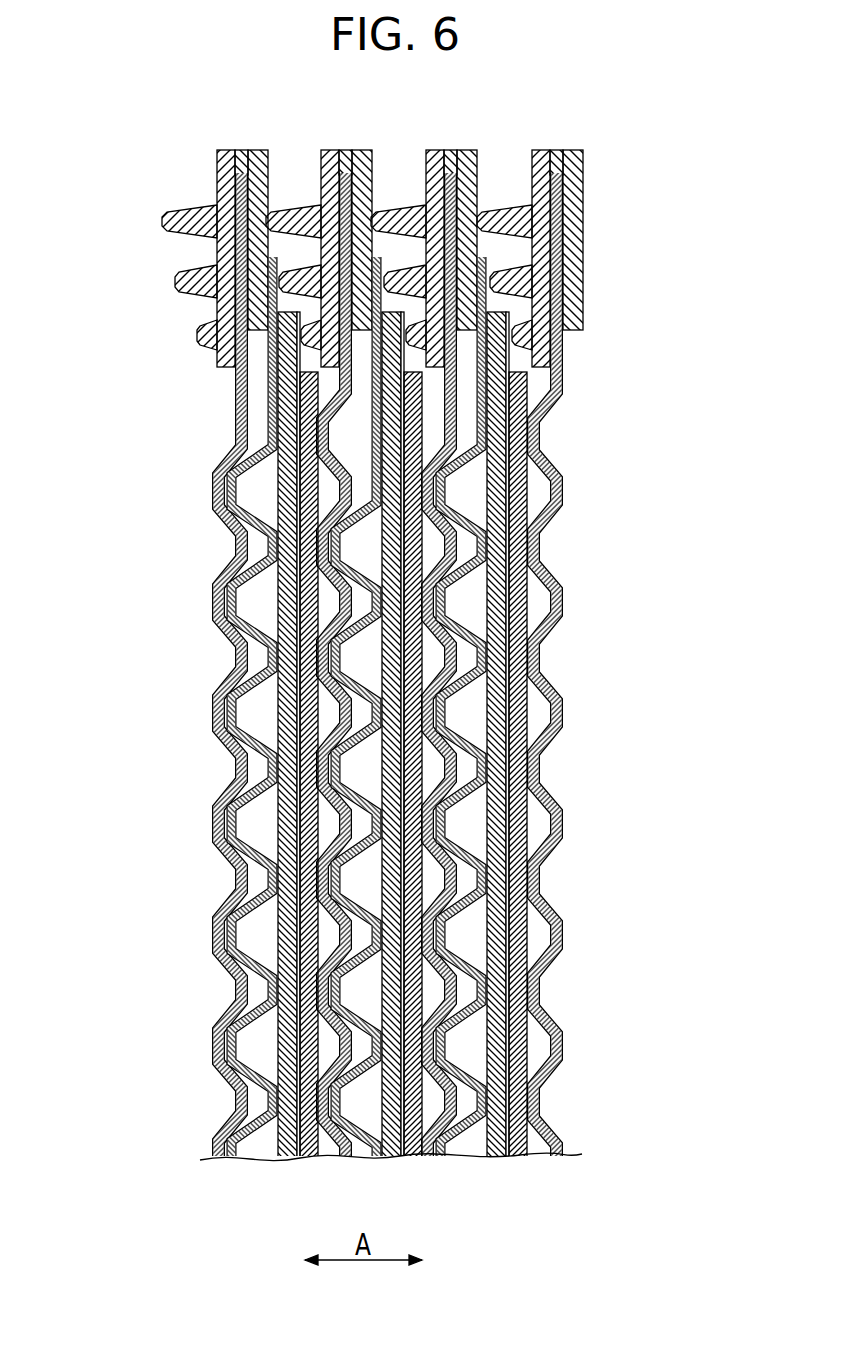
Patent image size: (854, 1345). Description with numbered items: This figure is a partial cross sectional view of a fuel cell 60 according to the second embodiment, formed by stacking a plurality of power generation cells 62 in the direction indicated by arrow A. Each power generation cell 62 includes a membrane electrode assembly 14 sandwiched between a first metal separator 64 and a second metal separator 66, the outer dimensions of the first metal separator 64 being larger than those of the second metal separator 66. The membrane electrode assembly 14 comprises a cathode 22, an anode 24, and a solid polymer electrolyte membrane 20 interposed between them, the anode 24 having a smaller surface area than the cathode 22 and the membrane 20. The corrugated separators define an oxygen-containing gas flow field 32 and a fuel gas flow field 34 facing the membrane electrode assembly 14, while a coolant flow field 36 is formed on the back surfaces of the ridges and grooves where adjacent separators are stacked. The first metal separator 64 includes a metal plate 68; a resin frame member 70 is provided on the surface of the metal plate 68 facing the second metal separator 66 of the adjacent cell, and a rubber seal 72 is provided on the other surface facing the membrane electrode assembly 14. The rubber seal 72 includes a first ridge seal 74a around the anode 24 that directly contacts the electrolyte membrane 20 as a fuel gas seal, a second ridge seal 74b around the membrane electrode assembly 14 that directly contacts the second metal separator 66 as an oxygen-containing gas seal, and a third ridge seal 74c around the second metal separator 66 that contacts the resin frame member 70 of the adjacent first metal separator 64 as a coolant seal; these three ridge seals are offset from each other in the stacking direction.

The fuel cell 60 is at (196, 75).
The resin frame member 70 is at (570, 150).
The rubber seal 72 is at (409, 254).
The first ridge seal 74a is at (410, 350).
The second ridge seal 74b is at (442, 298).
The third ridge seal 74c is at (440, 238).
The metal plate 68 is at (536, 428).
The power generation cell 62 is at (655, 970).
The first metal separator 64 is at (452, 1098).
The second metal separator 66 is at (350, 989).
The membrane electrode assembly 14 is at (655, 802).
The solid polymer electrolyte membrane 20 is at (509, 868).
The cathode 22 is at (497, 905).
The anode 24 is at (520, 834).
The oxygen-containing gas flow field 32 is at (370, 650).
The fuel gas flow field 34 is at (433, 655).
The coolant flow field 36 is at (462, 772).